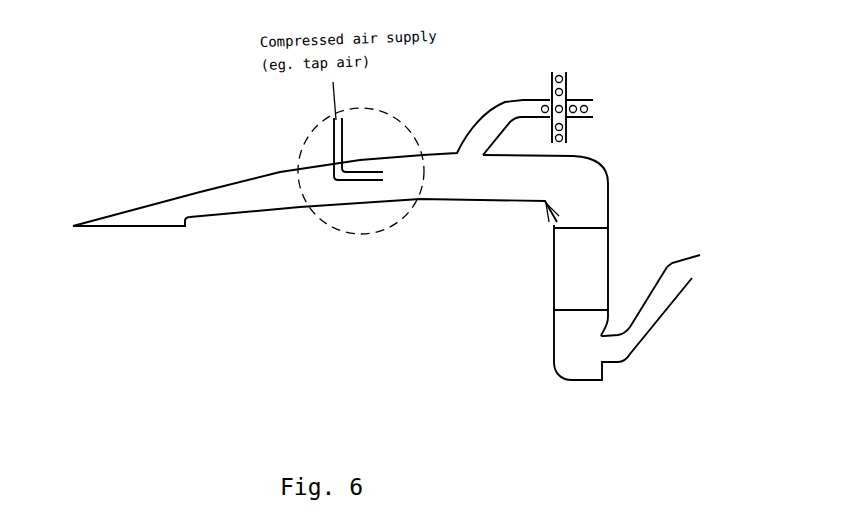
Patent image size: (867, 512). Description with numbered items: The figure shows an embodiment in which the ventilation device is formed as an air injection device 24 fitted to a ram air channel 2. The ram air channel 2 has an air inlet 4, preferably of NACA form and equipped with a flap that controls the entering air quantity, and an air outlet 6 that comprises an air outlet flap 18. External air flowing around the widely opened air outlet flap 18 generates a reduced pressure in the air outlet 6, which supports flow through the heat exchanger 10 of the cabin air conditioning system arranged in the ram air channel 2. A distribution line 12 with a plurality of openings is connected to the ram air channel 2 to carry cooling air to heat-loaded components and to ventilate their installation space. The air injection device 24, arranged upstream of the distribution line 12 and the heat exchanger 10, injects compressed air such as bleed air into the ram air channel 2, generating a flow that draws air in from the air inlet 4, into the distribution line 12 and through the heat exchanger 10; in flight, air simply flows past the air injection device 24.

The ram air channel 2 is at (442, 153).
The air inlet 4 is at (139, 229).
The air outlet 6 is at (642, 327).
The heat exchanger 10 is at (573, 267).
The distribution line 12 is at (568, 102).
The air outlet flap 18 is at (690, 252).
The air injection device 24 is at (348, 233).